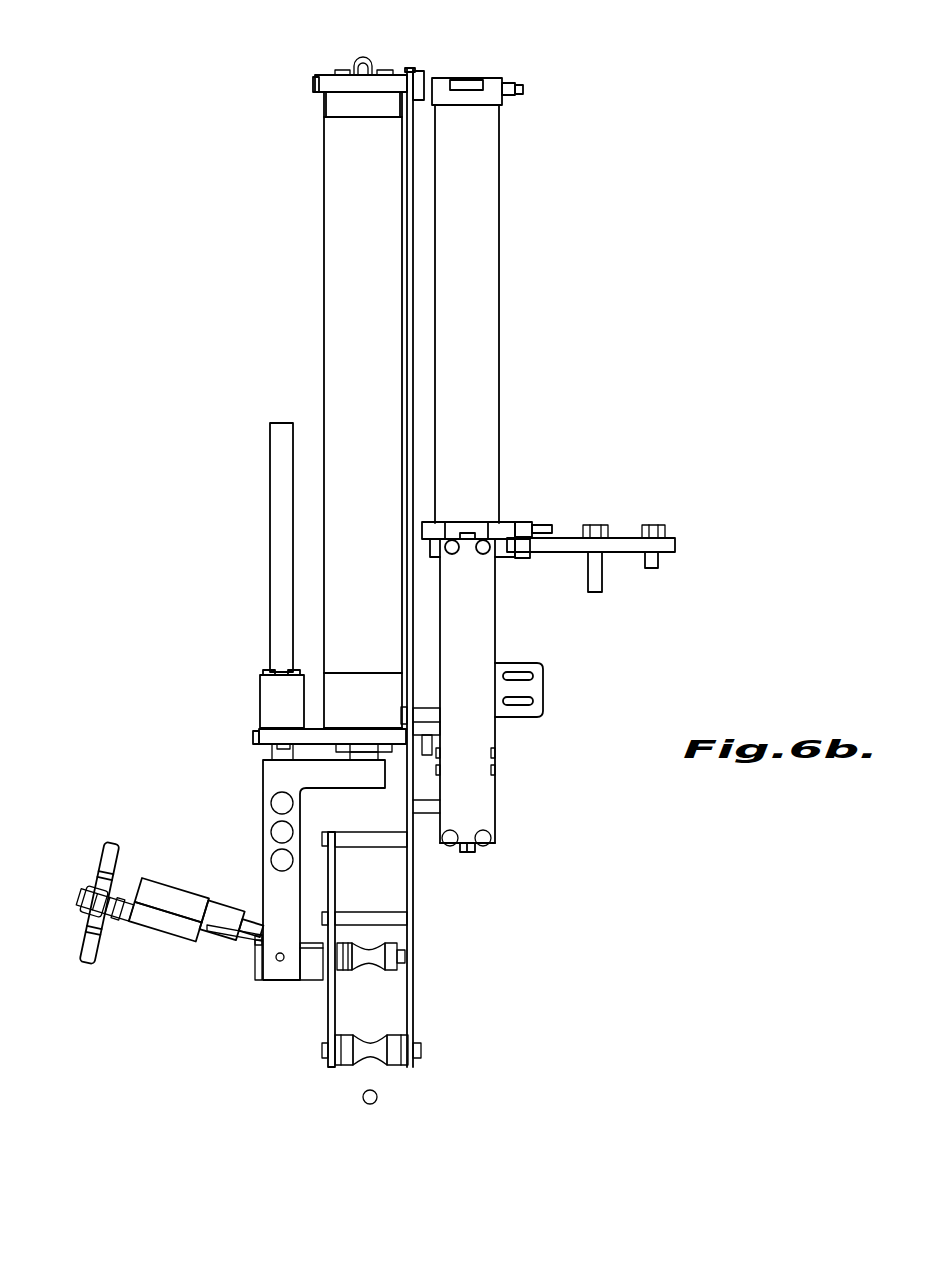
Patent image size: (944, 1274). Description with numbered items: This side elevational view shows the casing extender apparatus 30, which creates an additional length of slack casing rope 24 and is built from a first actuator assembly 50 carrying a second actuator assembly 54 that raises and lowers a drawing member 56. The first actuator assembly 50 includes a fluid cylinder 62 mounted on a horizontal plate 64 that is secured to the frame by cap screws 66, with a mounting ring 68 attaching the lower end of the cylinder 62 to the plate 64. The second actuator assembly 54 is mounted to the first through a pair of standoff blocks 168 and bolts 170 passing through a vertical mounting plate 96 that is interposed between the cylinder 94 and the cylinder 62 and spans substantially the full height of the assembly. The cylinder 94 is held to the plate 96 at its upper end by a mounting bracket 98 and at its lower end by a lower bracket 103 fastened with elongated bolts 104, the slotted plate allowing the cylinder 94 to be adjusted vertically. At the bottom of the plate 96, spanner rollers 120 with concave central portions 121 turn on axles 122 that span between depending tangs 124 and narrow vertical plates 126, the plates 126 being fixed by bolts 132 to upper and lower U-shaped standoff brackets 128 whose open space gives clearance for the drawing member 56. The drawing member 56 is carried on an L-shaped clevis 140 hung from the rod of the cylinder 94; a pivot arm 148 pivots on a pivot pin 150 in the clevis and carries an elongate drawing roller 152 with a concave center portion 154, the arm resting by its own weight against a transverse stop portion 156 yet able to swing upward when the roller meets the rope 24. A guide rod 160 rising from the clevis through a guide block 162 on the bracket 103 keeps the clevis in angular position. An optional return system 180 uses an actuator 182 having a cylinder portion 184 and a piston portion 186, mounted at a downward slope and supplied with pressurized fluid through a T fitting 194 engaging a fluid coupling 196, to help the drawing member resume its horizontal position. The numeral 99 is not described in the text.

The slack casing rope 24 is at (374, 1104).
The casing extender apparatus 30 is at (238, 266).
The first actuator assembly 50 is at (512, 278).
The second actuator assembly 54 is at (315, 310).
The drawing member 56 is at (260, 800).
The fluid cylinder 62 is at (483, 330).
The horizontal plate 64 is at (610, 548).
The cap screws 66 is at (610, 527).
The mounting ring 68 is at (510, 525).
The cylinder 94 is at (347, 527).
The vertical mounting plate 96 is at (412, 72).
The mounting bracket 98 is at (390, 74).
The fitting 99 is at (343, 72).
The lower bracket 103 is at (288, 748).
The elongated bolts 104 is at (253, 736).
The rollers 120 is at (393, 1063).
The concave central portions 121 is at (366, 1058).
The axles 122 is at (410, 1052).
The tangs 124 is at (413, 1030).
The narrow vertical plates 126 is at (328, 1030).
The U-shaped standoff brackets 128 is at (390, 838).
The bolts 132 is at (324, 915).
The L-shaped clevis 140 is at (268, 830).
The pivot arm 148 is at (278, 962).
The pivot pin 150 is at (258, 968).
The drawing roller 152 is at (395, 960).
The concave center portion 154 is at (373, 936).
The transverse stop portion 156 is at (318, 960).
The guide rod 160 is at (280, 590).
The guide block 162 is at (275, 690).
The standoff blocks 168 is at (433, 712).
The bolts 170 is at (401, 713).
The return system 180 is at (170, 877).
The actuator 182 is at (104, 852).
The cylinder portion 184 is at (185, 877).
The piston portion 186 is at (250, 926).
The T fitting 194 is at (85, 900).
The fluid coupling 196 is at (196, 935).